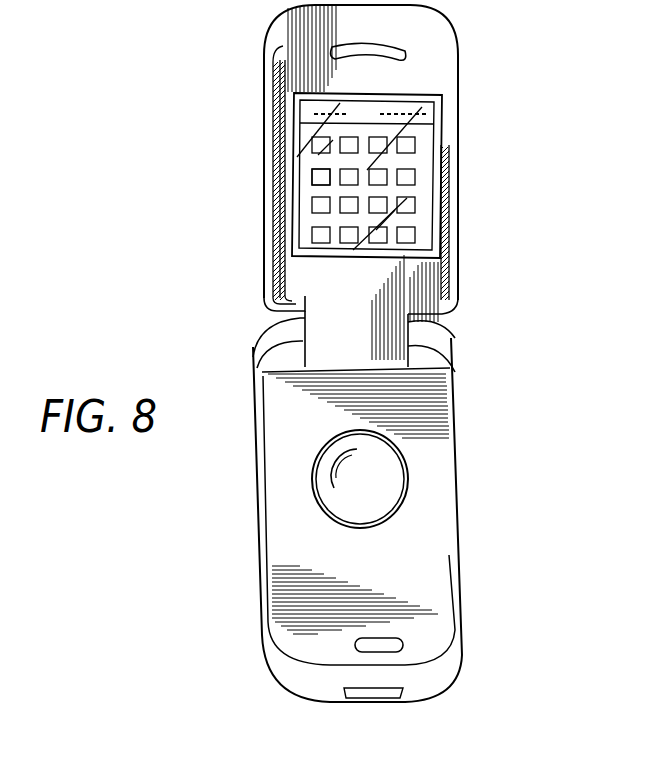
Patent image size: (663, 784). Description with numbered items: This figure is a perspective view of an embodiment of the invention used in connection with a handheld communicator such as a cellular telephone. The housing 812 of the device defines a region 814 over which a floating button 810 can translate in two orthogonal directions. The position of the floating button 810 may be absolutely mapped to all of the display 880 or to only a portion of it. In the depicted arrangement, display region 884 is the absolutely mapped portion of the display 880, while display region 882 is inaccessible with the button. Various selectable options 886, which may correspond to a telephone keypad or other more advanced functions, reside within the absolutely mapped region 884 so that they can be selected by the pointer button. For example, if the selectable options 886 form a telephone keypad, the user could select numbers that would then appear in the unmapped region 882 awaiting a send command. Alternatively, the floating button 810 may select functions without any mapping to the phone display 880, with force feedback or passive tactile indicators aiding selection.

The display 880 is at (418, 238).
The display region 882 is at (418, 118).
The display region 884 is at (418, 181).
The selectable options 886 is at (313, 172).
The floating button 810 is at (398, 467).
The region 814 is at (407, 502).
The housing 812 is at (408, 577).